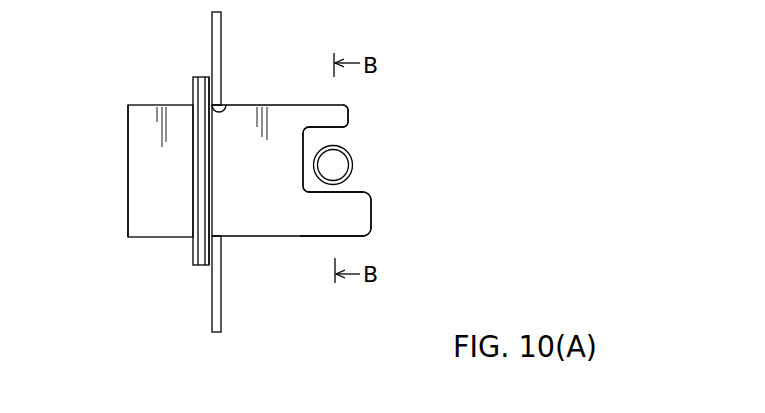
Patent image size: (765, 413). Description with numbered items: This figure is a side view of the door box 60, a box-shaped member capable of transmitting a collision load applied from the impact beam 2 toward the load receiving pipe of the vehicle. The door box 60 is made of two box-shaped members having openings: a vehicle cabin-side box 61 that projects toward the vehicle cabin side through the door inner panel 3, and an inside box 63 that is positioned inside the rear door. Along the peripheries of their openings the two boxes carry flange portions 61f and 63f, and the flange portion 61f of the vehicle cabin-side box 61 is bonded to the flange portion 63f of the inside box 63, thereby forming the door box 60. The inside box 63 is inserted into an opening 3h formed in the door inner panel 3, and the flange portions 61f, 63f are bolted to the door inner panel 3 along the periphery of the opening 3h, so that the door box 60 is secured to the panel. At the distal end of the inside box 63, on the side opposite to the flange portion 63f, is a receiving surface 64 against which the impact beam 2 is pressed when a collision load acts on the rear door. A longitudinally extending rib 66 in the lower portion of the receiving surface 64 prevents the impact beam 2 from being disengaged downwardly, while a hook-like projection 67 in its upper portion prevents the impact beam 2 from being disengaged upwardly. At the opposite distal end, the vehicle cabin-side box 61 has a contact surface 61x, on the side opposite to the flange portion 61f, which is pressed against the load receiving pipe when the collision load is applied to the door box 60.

The impact beam 2 is at (354, 165).
The door inner panel 3 is at (217, 38).
The opening 3h is at (223, 103).
The door box 60 is at (244, 160).
The vehicle cabin-side box 61 is at (141, 210).
The contact surface 61x is at (128, 166).
The flange portion 61f is at (198, 193).
The inside box 63 is at (278, 202).
The flange portion 63f is at (207, 167).
The receiving surface 64 is at (305, 147).
The longitudinally extending rib 66 is at (352, 216).
The hook-like projection 67 is at (332, 116).